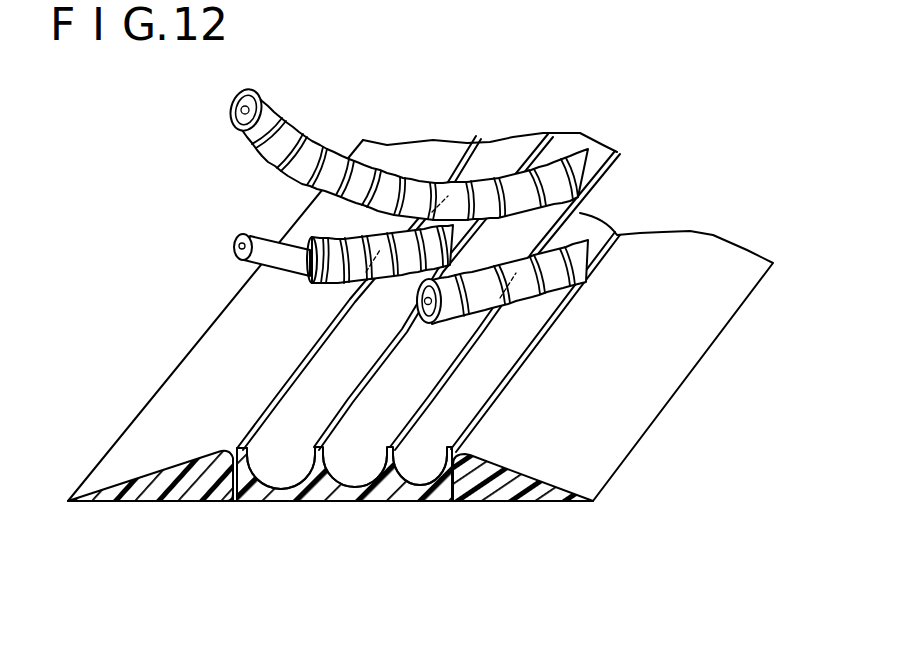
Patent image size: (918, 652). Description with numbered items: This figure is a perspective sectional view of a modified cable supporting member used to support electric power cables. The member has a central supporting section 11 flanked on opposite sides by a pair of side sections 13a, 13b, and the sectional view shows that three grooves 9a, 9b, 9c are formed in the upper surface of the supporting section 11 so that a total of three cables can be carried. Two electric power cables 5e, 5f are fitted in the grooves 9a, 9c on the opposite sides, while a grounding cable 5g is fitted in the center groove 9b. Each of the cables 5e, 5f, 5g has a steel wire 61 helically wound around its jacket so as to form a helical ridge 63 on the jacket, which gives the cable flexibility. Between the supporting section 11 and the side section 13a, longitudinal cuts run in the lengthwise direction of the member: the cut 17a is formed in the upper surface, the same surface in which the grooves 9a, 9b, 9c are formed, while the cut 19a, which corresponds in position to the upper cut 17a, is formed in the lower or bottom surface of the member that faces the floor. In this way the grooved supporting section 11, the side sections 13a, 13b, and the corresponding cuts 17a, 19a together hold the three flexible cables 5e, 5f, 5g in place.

The electric power cable 5e is at (317, 247).
The electric power cable 5f is at (570, 296).
The grounding cable 5g is at (282, 128).
The steel wire 61 is at (308, 147).
The helical ridge 63 is at (505, 187).
The groove 9a is at (253, 476).
The groove 9b is at (323, 474).
The groove 9c is at (405, 473).
The supporting section 11 is at (313, 493).
The side section 13a is at (167, 493).
The side section 13b is at (530, 491).
The cut 17a is at (228, 443).
The cut 19a is at (237, 506).